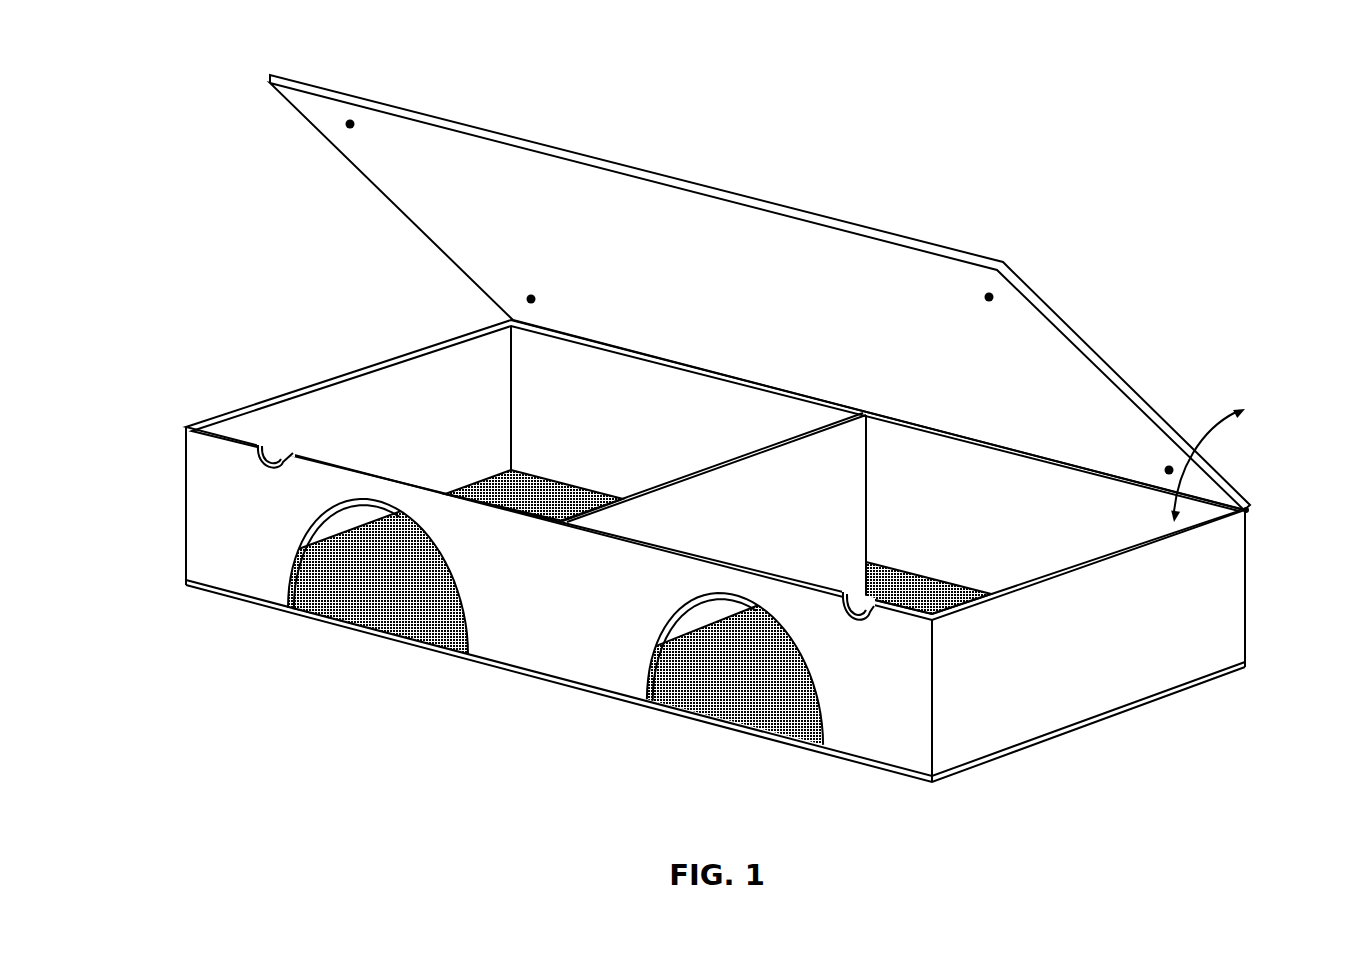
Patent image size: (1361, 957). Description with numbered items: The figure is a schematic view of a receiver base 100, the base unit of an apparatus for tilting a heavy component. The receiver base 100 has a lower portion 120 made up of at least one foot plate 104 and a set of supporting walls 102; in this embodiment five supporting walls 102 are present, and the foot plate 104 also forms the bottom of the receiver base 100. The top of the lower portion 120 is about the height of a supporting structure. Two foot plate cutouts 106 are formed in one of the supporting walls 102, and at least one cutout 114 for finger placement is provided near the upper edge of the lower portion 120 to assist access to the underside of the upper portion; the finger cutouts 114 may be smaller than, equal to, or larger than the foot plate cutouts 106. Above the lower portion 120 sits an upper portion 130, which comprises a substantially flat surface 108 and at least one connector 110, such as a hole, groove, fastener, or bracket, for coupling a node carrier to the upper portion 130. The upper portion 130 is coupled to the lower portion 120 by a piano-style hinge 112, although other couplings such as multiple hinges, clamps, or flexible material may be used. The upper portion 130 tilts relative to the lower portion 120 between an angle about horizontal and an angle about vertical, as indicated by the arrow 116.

The receiver base 100 is at (933, 146).
The supporting walls 102 is at (346, 440).
The foot plate 104 is at (540, 507).
The foot plate cutouts 106 is at (385, 612).
The substantially flat surface 108 is at (722, 315).
The connector 110 is at (351, 122).
The piano-style hinge 112 is at (1262, 512).
The finger cutout 114 is at (251, 475).
The arrow 116 is at (1213, 465).
The lower portion 120 is at (542, 706).
The upper portion 130 is at (390, 238).